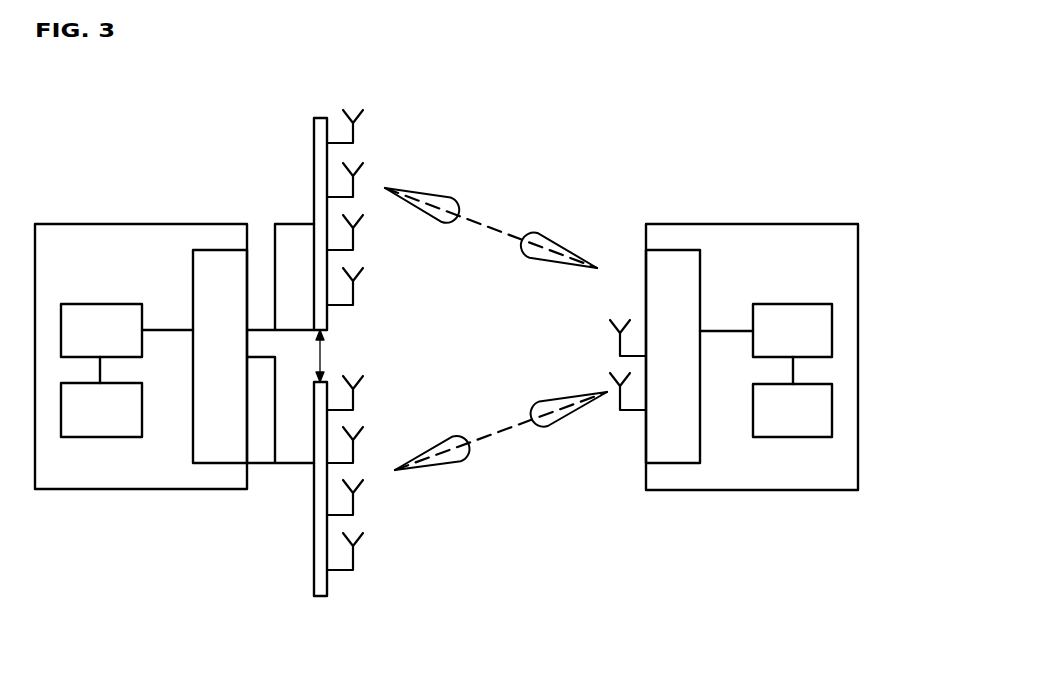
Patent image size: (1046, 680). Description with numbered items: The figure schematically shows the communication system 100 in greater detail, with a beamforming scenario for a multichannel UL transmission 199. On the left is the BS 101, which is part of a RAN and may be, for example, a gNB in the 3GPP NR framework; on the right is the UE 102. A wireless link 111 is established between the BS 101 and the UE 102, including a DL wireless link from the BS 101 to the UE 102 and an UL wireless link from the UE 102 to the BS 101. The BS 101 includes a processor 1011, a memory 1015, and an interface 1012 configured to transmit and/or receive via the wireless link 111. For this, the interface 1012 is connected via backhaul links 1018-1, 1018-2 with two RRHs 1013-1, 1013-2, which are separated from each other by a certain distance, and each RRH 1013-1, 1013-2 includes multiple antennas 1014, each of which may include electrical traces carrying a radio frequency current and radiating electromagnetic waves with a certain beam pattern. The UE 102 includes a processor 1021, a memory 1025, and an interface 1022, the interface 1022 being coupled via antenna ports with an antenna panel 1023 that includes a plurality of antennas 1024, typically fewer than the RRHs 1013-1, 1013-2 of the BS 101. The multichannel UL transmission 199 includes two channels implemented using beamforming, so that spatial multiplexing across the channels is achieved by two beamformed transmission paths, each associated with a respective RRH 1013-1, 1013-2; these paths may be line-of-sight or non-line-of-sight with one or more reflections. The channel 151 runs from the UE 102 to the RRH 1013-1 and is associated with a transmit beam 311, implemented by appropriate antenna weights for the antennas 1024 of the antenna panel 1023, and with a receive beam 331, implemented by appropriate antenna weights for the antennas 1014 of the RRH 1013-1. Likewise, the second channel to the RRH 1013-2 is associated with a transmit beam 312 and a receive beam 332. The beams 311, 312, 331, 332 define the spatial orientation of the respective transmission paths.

The communication system 100 is at (840, 33).
The BS 101 is at (165, 224).
The UE 102 is at (670, 224).
The wireless link 111 is at (529, 66).
The multichannel UL transmission 199 is at (497, 161).
The channel 151 is at (490, 230).
The transmit beam 311 is at (534, 225).
The transmit beam 312 is at (544, 405).
The receive beam 331 is at (458, 205).
The receive beam 332 is at (450, 430).
The processor 1011 is at (73, 304).
The interface 1012 is at (193, 268).
The RRH 1013-1 is at (322, 118).
The RRH 1013-2 is at (320, 596).
The antenna 1014 is at (365, 110).
The memory 1015 is at (75, 437).
The backhaul link 1018-1 is at (287, 224).
The backhaul link 1018-2 is at (287, 463).
The processor 1021 is at (826, 304).
The interface 1022 is at (700, 267).
The antenna panel 1023 is at (619, 215).
The antenna 1024 is at (622, 319).
The memory 1025 is at (828, 437).